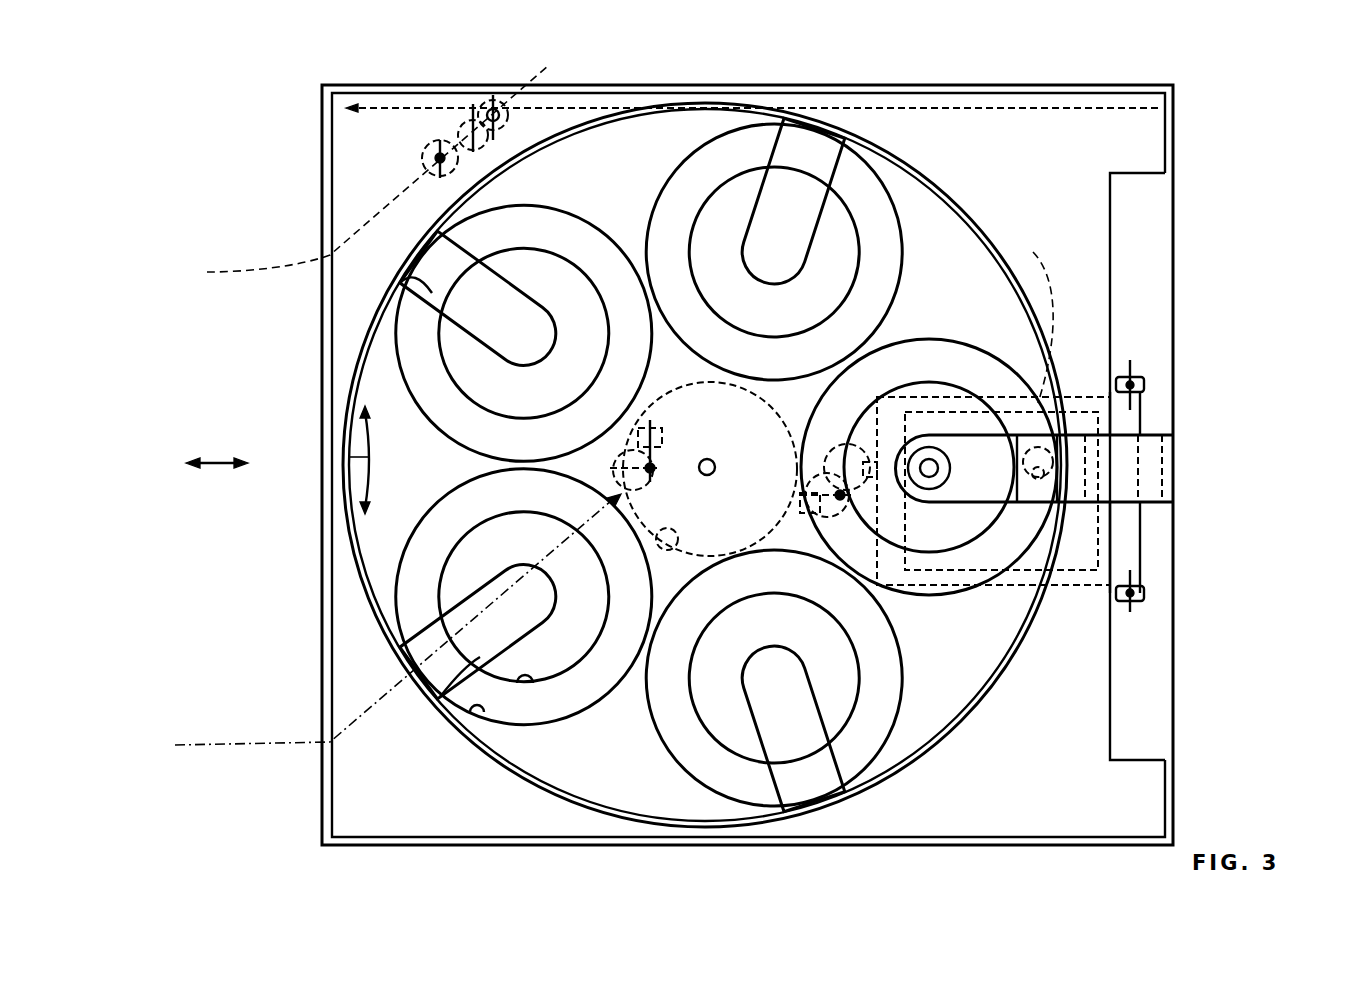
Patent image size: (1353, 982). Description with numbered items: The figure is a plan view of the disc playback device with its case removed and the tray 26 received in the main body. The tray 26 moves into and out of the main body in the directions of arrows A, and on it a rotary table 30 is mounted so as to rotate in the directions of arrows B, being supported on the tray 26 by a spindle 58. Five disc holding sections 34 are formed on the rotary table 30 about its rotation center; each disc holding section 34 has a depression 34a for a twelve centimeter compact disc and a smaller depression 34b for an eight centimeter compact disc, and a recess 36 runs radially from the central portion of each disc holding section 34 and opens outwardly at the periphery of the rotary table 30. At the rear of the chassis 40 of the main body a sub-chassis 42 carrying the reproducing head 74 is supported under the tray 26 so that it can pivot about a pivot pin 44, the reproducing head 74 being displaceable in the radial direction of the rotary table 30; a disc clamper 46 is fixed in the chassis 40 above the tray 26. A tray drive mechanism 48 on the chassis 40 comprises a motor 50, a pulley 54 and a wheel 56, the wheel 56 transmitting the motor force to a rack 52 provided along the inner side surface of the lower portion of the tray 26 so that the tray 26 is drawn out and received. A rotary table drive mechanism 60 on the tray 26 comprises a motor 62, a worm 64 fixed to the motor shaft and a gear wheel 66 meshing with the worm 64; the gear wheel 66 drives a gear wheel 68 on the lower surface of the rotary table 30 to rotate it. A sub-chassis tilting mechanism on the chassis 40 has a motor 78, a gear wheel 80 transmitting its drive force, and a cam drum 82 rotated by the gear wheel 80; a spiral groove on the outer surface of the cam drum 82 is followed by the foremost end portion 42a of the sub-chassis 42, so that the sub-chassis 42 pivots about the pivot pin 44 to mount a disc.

The tray 26 is at (355, 768).
The rotary table 30 is at (370, 543).
The disc holding section 34 is at (838, 232).
The depression 34a is at (477, 713).
The depression 34b is at (520, 685).
The recess 36 is at (757, 210).
The chassis 40 is at (1157, 250).
The sub-chassis 42 is at (1077, 588).
The foremost end portion 42a is at (880, 368).
The pivot pin 44 is at (1137, 606).
The disc clamper 46 is at (940, 485).
The tray drive mechanism 48 is at (400, 158).
The motor 50 is at (362, 175).
The rack 52 is at (350, 108).
The pulley 54 is at (456, 126).
The wheel 56 is at (503, 108).
The spindle 58 is at (708, 477).
The rotary table drive mechanism 60 is at (379, 626).
The motor 62 is at (666, 436).
The worm 64 is at (655, 481).
The gear wheel 66 is at (614, 468).
The gear wheel 68 is at (669, 550).
The reproducing head 74 is at (1032, 319).
The motor 78 is at (807, 514).
The gear wheel 80 is at (845, 512).
The cam drum 82 is at (838, 452).
The arrows A is at (212, 465).
The arrows B is at (367, 457).